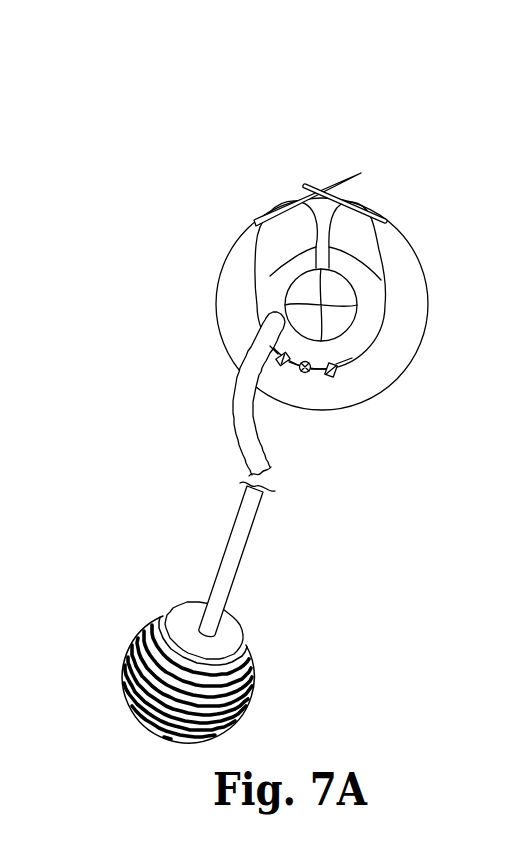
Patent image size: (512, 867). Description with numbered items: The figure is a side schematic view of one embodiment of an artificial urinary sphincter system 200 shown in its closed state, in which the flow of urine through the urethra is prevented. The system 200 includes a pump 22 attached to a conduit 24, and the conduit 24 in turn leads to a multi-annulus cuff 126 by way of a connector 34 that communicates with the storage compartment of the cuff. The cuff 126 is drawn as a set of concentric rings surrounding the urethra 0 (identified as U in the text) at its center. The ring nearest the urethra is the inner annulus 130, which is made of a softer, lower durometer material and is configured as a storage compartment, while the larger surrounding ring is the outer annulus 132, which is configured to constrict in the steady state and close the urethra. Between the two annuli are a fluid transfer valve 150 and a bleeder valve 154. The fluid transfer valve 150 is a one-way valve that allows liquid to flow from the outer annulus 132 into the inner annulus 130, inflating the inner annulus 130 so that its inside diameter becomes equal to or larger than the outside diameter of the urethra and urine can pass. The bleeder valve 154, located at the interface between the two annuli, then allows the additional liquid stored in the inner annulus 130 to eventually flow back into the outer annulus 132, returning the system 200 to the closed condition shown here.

The artificial urinary sphincter system 200 is at (361, 105).
The multi-annulus cuff 126 is at (327, 266).
The inner annulus 130 is at (278, 276).
The outer annulus 132 is at (236, 292).
The urethra 0 is at (345, 324).
The connector 34 is at (240, 409).
The fluid transfer valve 150 is at (302, 374).
The bleeder valve 154 is at (333, 377).
The conduit 24 is at (235, 567).
The pump 22 is at (257, 673).